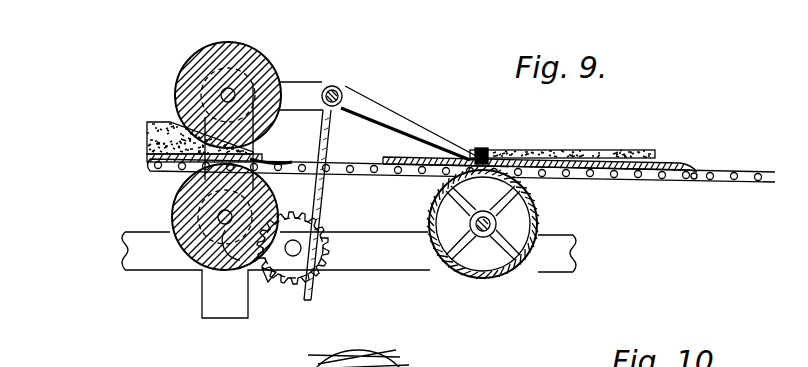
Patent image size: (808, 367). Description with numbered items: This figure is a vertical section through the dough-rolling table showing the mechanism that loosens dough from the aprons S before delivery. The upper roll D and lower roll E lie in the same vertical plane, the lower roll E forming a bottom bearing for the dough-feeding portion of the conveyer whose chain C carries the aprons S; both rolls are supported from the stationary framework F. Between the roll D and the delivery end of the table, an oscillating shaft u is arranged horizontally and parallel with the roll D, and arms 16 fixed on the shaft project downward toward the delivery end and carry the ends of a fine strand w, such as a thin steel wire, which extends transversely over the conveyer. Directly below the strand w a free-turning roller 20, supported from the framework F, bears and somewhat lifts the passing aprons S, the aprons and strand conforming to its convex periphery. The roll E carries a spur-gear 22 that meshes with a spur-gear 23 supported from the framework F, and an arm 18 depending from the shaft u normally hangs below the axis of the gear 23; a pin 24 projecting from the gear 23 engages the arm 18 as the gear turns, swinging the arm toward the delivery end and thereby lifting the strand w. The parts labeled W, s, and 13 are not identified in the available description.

The upper roll D is at (183, 93).
The lower roll E is at (168, 197).
The work piece W is at (150, 130).
The aprons S is at (143, 158).
The plate end s is at (692, 170).
The stationary framework F is at (208, 297).
The conveyer chain C is at (610, 182).
The chain roller 13 is at (697, 182).
The oscillating shaft u is at (345, 92).
The strand w is at (485, 152).
The arm 16 is at (407, 122).
The arm 18 is at (323, 200).
The roller 20 is at (542, 219).
The spur-gear 22 is at (233, 263).
The spur-gear 23 is at (294, 288).
The pin 24 is at (268, 283).